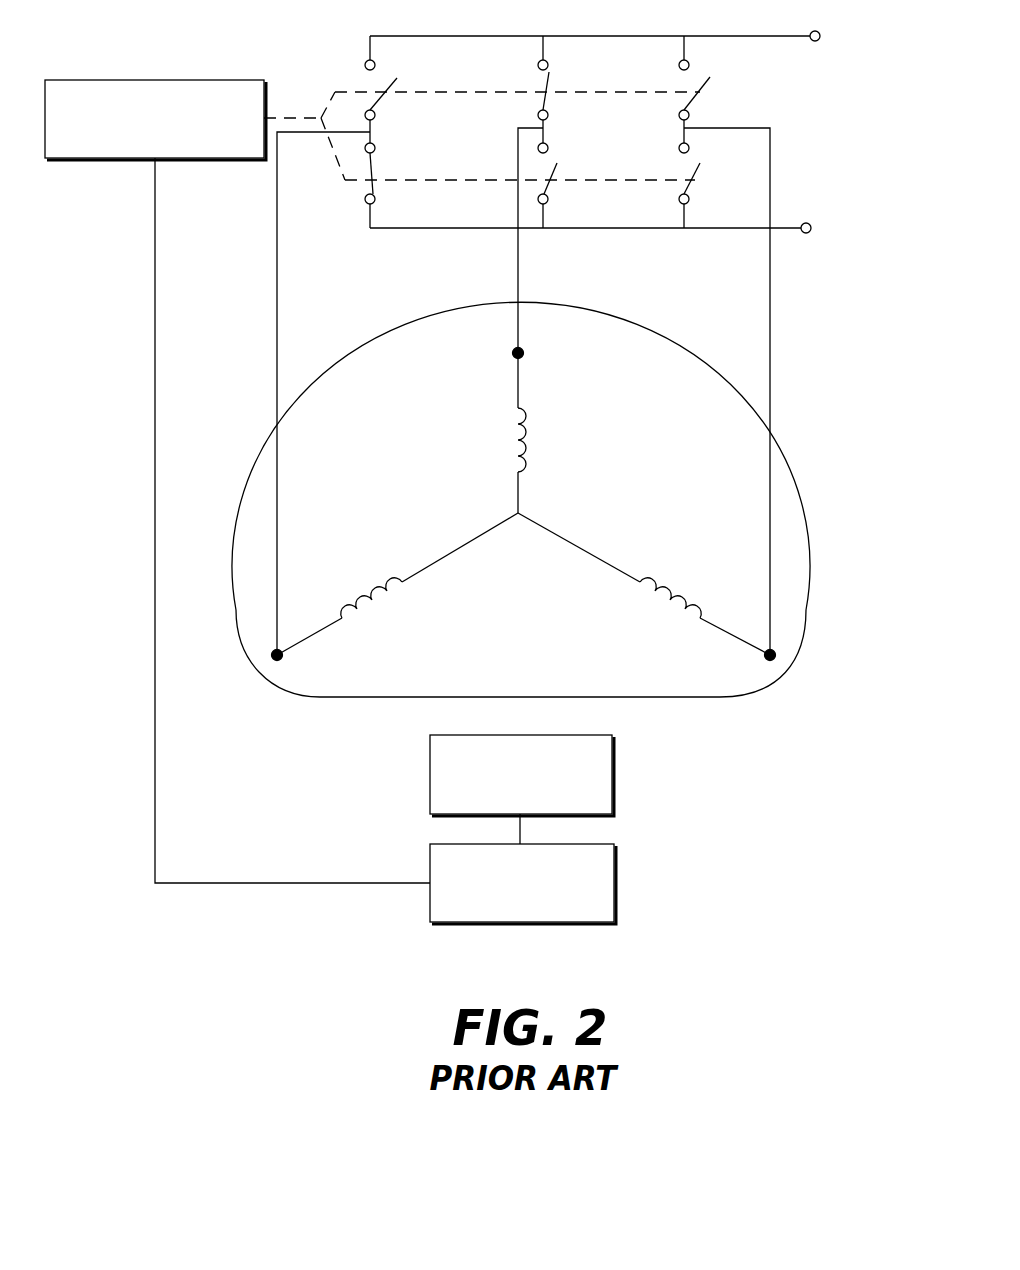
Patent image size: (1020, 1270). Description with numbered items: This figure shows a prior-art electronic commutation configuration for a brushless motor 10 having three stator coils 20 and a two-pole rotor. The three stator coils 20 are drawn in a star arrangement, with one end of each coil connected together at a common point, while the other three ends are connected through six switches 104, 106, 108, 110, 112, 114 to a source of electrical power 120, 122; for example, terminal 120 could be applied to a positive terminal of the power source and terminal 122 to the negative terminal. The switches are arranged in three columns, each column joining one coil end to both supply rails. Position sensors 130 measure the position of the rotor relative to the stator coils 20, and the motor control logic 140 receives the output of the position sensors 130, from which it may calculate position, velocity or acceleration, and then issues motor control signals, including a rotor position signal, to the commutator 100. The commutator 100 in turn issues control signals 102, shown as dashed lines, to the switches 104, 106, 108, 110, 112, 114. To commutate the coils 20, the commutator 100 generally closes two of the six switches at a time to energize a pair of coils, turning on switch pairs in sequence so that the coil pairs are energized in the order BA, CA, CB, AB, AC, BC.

The motor 10 is at (772, 438).
The stator coils 20 is at (526, 424).
The commutator 100 is at (165, 80).
The control signals 102 is at (292, 116).
The switch 104 is at (390, 100).
The switch 106 is at (549, 88).
The switch 108 is at (710, 95).
The switch 110 is at (373, 166).
The switch 112 is at (550, 182).
The switch 114 is at (690, 180).
The source of electrical power 120 is at (820, 36).
The source of electrical power 122 is at (811, 228).
The position sensors 130 is at (614, 770).
The motor control logic 140 is at (616, 878).